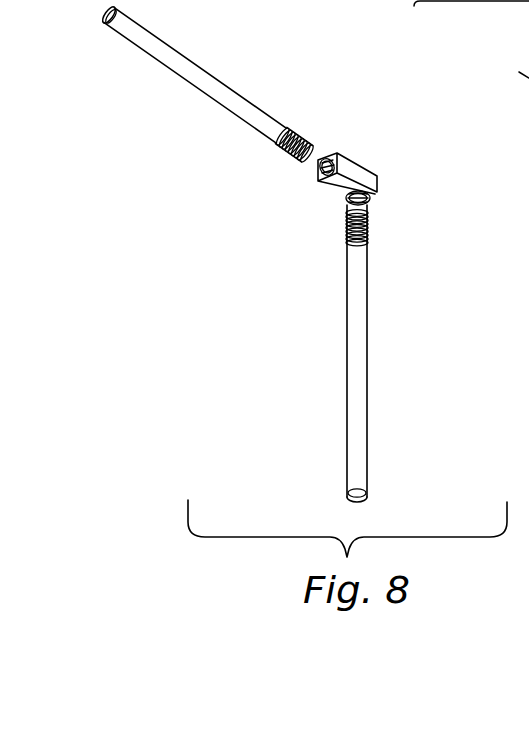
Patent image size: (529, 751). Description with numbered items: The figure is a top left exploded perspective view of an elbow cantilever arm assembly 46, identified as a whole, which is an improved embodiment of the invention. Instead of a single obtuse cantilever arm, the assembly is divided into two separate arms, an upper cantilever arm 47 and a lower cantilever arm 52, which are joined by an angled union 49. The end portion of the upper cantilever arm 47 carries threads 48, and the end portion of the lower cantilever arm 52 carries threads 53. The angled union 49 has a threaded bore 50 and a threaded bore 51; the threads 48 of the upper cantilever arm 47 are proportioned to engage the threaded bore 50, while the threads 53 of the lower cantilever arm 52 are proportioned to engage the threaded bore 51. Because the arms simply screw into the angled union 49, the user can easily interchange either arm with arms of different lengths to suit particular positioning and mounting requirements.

The elbow cantilever arm assembly 46 is at (214, 243).
The upper cantilever arm 47 is at (226, 95).
The threads 48 is at (296, 133).
The angled union 49 is at (359, 173).
The threaded bore 50 is at (319, 160).
The threaded bore 51 is at (366, 203).
The lower cantilever arm 52 is at (361, 338).
The threads 53 is at (369, 235).